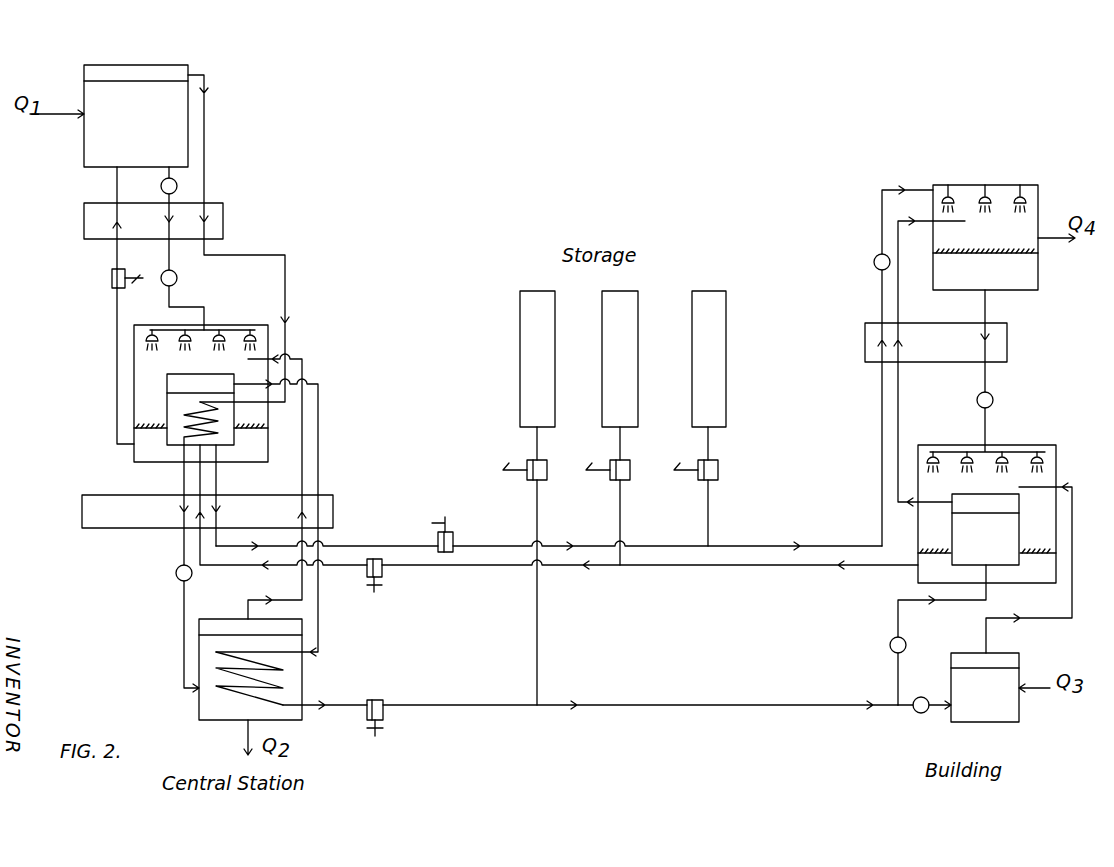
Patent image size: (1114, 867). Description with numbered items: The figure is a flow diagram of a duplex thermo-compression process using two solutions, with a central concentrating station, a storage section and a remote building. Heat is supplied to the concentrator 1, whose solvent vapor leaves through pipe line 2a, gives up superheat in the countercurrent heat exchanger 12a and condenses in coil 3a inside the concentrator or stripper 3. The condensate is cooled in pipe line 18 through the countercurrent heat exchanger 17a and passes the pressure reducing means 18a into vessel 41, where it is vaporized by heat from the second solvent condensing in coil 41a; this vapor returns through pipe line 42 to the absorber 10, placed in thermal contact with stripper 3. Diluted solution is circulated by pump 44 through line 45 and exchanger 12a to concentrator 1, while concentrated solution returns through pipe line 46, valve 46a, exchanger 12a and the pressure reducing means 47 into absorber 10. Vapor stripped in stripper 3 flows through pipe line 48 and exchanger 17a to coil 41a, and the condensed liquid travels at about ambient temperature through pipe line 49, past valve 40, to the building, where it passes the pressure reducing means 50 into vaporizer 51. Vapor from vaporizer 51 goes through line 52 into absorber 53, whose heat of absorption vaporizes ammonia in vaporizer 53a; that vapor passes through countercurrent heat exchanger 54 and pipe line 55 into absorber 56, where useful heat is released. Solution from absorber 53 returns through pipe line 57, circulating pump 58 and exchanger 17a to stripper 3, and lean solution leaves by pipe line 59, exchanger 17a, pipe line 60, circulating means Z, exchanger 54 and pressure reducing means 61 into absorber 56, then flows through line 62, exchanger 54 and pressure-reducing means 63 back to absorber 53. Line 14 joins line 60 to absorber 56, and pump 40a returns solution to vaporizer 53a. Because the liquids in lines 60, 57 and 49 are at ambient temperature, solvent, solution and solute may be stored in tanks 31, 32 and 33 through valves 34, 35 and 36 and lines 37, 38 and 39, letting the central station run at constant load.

The concentrator 1 is at (84, 150).
The pipe line 2a is at (207, 120).
The valve 46a is at (161, 186).
The countercurrent heat exchanger 12a is at (153, 221).
The pump 44 is at (131, 269).
The line 45 is at (118, 326).
The pipe line 46 is at (207, 322).
The pressure reducing means 47 is at (178, 282).
The absorber 10 is at (201, 393).
The concentrator or stripper 3 is at (200, 409).
The coil 3a is at (196, 404).
The pipe line 48 is at (319, 437).
The pipe line 42 is at (302, 470).
The pipe line 18 is at (183, 478).
The pipe line 59 is at (217, 492).
The pipe line 57 is at (482, 568).
The pipe line 60 is at (510, 546).
The circulating means Z is at (431, 532).
The circulating pump 58 is at (372, 589).
The countercurrent heat exchanger 17a is at (207, 511).
The pressure reducing means 18a is at (176, 572).
The vessel 41 is at (219, 619).
The coil 41a is at (247, 692).
The valve 40 is at (367, 705).
The pipe line 49 is at (467, 705).
The tank 31 is at (537, 359).
The tank 32 is at (620, 359).
The tank 33 is at (709, 359).
The valve 34 is at (518, 453).
The valve 35 is at (600, 453).
The valve 36 is at (688, 453).
The line 37 is at (537, 508).
The line 38 is at (620, 508).
The line 39 is at (708, 508).
The line 14 is at (882, 302).
The pressure reducing means 61 is at (874, 260).
The pipe line 55 is at (899, 320).
The absorber 56 is at (985, 237).
The line 62 is at (990, 300).
The countercurrent heat exchanger 54 is at (936, 342).
The pressure-reducing means 63 is at (998, 395).
The absorber 53 is at (987, 495).
The vaporizer 53a is at (985, 529).
The line 52 is at (1073, 576).
The vaporizer 51 is at (985, 687).
The pump 40a is at (890, 646).
The pressure reducing means 50 is at (915, 714).